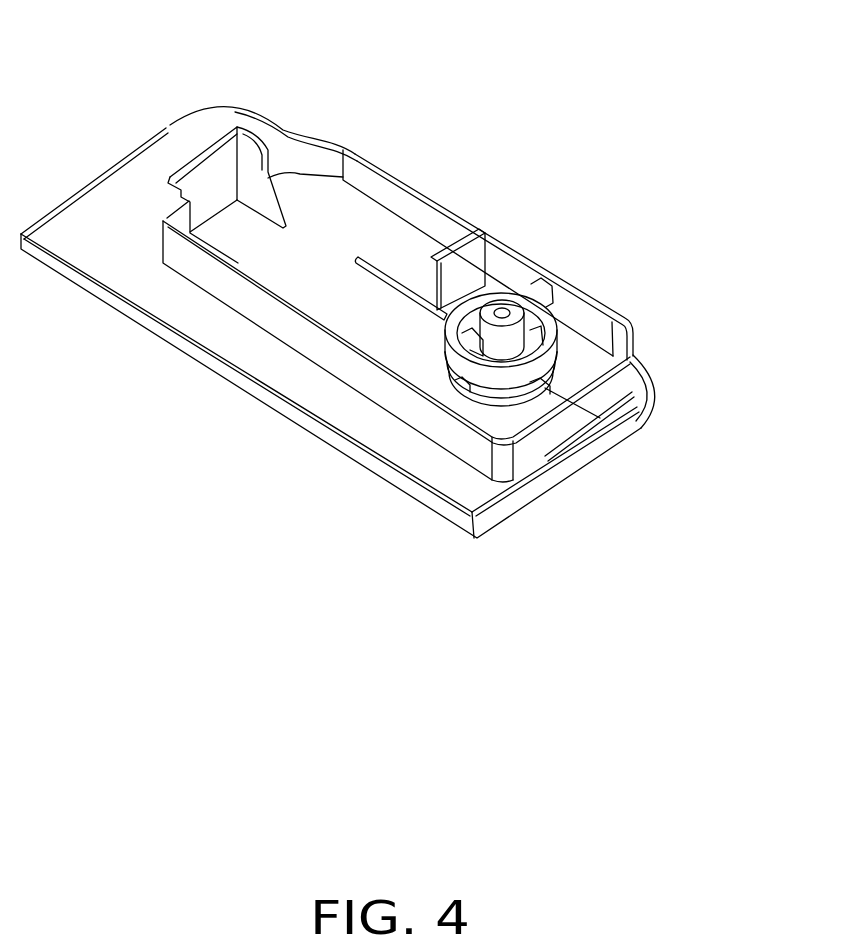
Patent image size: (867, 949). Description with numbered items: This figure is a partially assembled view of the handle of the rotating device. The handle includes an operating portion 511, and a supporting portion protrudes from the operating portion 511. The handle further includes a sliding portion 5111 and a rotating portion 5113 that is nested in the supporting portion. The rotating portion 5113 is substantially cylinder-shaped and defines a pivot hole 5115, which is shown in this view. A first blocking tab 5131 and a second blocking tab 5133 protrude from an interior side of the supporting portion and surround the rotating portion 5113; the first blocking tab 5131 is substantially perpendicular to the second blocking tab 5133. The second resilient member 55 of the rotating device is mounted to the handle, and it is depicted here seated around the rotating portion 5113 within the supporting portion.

The operating portion 511 is at (302, 382).
The sliding portion 5111 is at (194, 155).
The first blocking tab 5131 is at (447, 252).
The second blocking tab 5133 is at (600, 418).
The rotating portion 5113 is at (590, 281).
The pivot hole 5115 is at (502, 313).
The second resilient member 55 is at (502, 400).